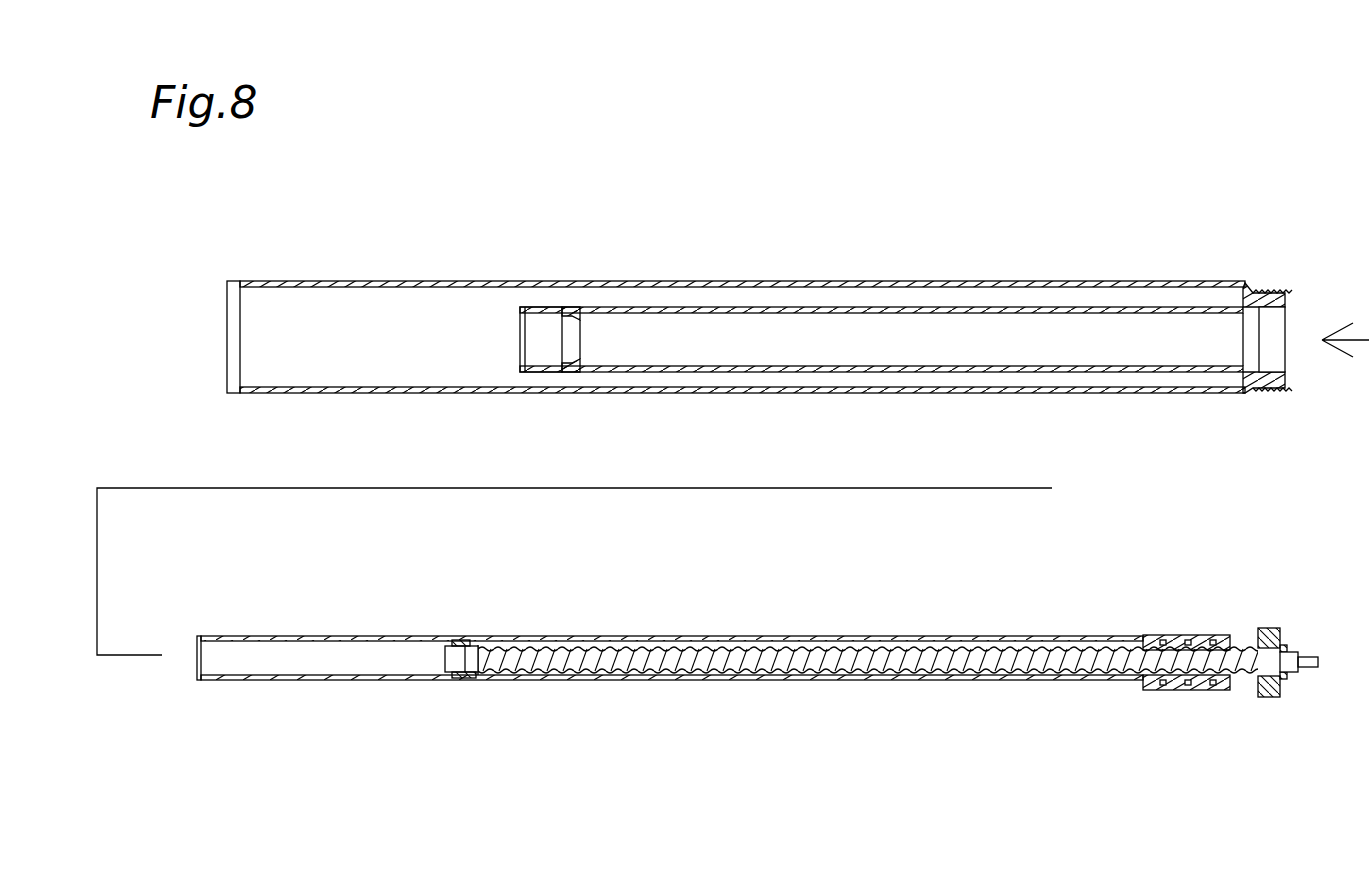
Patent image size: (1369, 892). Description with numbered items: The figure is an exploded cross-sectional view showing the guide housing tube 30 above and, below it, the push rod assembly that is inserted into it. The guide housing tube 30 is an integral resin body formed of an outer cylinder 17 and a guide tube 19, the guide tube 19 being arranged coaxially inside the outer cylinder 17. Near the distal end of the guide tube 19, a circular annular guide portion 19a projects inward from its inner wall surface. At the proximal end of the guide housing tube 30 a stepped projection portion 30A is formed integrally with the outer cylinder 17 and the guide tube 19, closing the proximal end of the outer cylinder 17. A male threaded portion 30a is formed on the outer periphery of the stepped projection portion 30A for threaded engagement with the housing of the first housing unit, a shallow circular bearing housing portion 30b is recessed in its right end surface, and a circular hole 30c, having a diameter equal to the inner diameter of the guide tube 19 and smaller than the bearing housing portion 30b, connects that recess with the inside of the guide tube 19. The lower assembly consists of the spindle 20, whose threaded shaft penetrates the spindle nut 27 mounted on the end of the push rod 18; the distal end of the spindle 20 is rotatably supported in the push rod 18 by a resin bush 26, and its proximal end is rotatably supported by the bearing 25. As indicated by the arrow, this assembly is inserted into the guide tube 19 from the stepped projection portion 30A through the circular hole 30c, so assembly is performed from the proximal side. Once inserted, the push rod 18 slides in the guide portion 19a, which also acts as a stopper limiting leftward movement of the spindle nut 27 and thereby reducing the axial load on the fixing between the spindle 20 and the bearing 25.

The outer cylinder 17 is at (456, 282).
The guide tube 19 is at (876, 309).
The guide portion 19a is at (582, 314).
The guide housing tube 30 is at (729, 280).
The stepped projection portion 30A is at (1270, 388).
The male threaded portion 30a is at (1268, 292).
The bearing housing portion 30b is at (1283, 314).
The circular hole 30c is at (1245, 356).
The push rod 18 is at (388, 680).
The spindle 20 is at (1065, 680).
The resin bush 26 is at (468, 680).
The spindle nut 27 is at (1190, 690).
The bearing 25 is at (1272, 697).